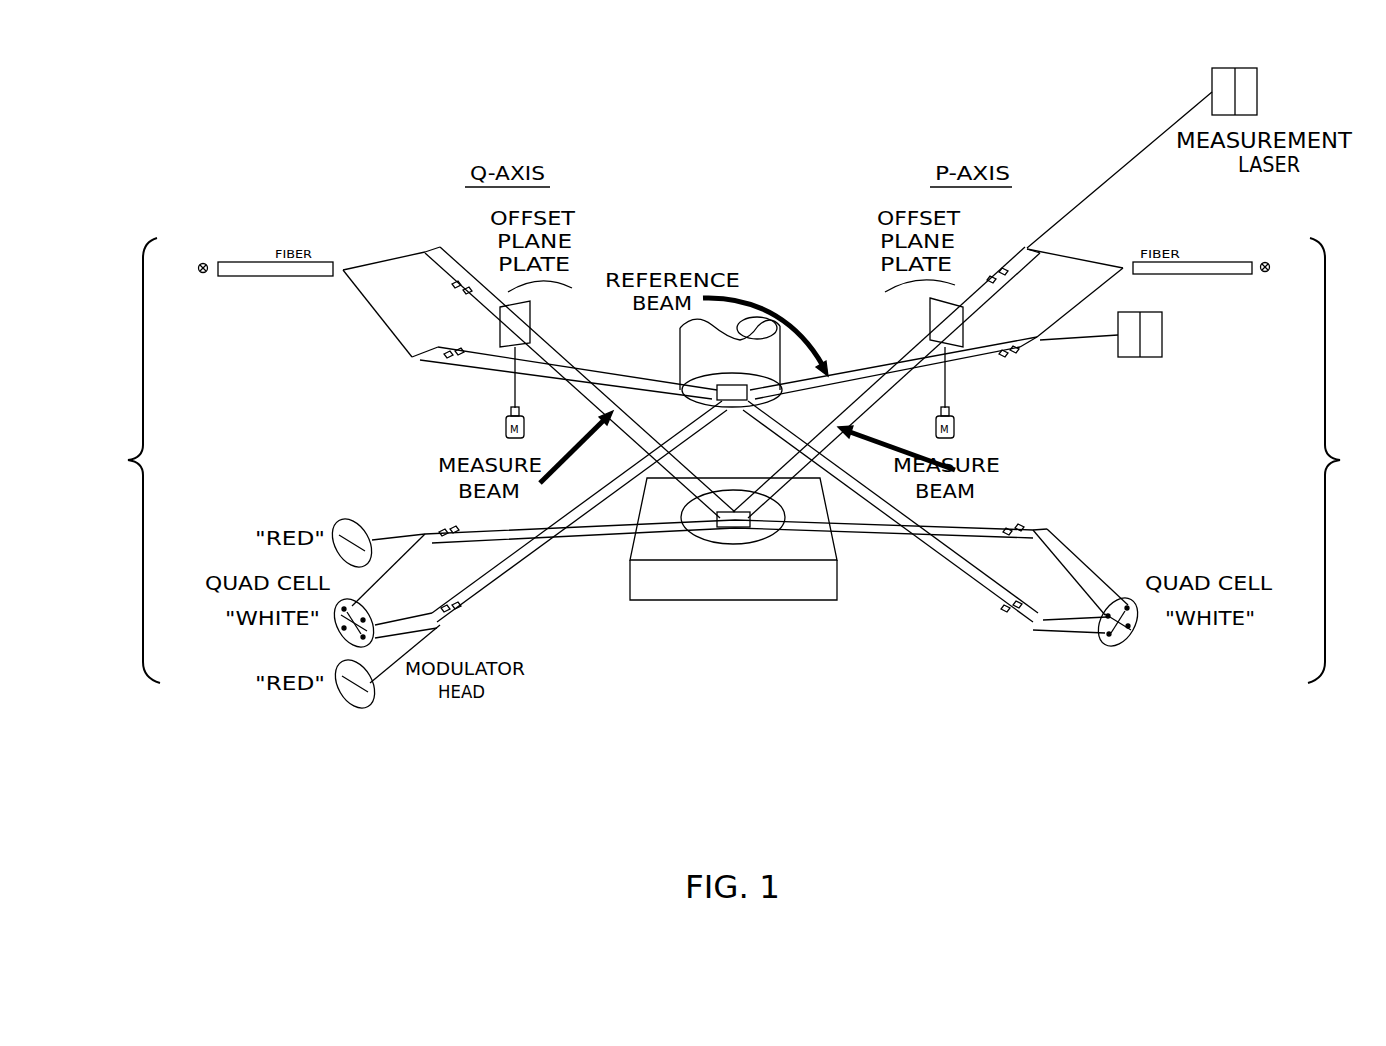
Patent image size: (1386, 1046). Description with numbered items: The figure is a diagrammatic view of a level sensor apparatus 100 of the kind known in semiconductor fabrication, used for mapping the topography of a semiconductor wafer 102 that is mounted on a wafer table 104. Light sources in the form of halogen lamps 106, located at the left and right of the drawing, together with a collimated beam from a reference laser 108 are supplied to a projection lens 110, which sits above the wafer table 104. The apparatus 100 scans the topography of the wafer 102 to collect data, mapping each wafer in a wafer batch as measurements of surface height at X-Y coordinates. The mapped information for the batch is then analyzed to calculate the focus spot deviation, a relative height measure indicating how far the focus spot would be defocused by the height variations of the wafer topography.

The level sensor apparatus 100 is at (128, 460).
The semiconductor wafer 102 is at (757, 533).
The wafer table 104 is at (647, 577).
The halogen lamps 106 is at (204, 273).
The reference laser 108 is at (1162, 335).
The projection lens 110 is at (756, 325).